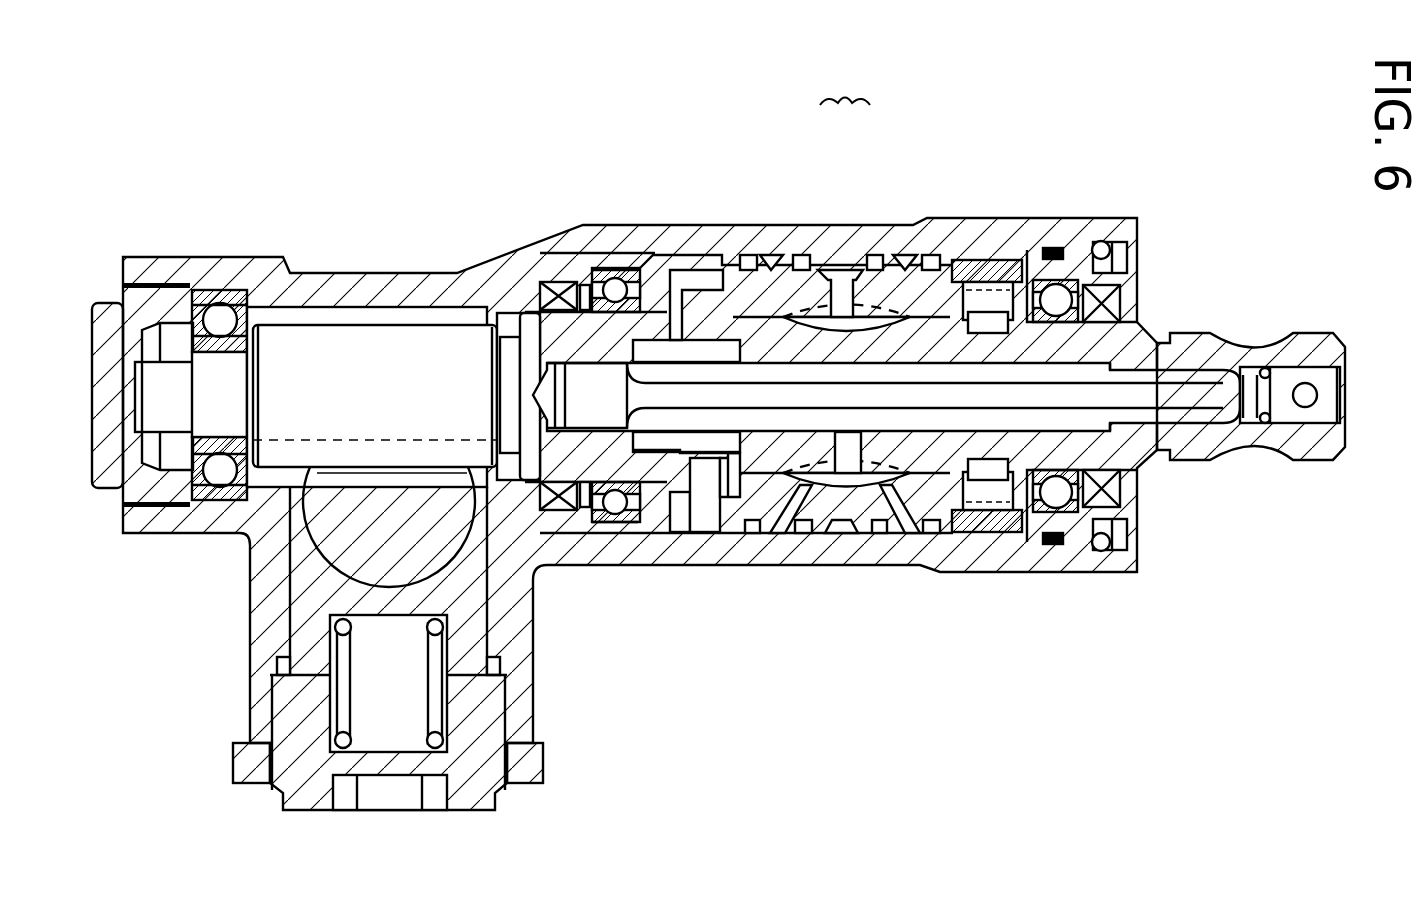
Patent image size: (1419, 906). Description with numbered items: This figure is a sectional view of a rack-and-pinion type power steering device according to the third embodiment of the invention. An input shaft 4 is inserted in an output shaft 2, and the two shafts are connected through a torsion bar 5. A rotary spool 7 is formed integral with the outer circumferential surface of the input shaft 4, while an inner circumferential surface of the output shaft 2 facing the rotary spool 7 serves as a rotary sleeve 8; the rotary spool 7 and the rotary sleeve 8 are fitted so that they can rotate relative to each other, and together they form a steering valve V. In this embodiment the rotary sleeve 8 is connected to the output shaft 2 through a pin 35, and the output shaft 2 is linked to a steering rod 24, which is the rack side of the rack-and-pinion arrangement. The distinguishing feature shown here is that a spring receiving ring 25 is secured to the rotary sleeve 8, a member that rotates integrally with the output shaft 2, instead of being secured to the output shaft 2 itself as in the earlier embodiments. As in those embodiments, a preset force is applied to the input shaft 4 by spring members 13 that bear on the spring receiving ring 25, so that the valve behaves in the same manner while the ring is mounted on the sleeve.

The output shaft 2 is at (529, 310).
The input shaft 4 is at (1242, 350).
The torsion bar 5 is at (1155, 388).
The rotary spool 7 is at (782, 330).
The rotary sleeve 8 is at (893, 272).
The spring members 13 is at (752, 393).
The steering rod 24 is at (313, 533).
The spring receiving ring 25 is at (972, 262).
The pin 35 is at (705, 533).
The steering valve V is at (845, 79).